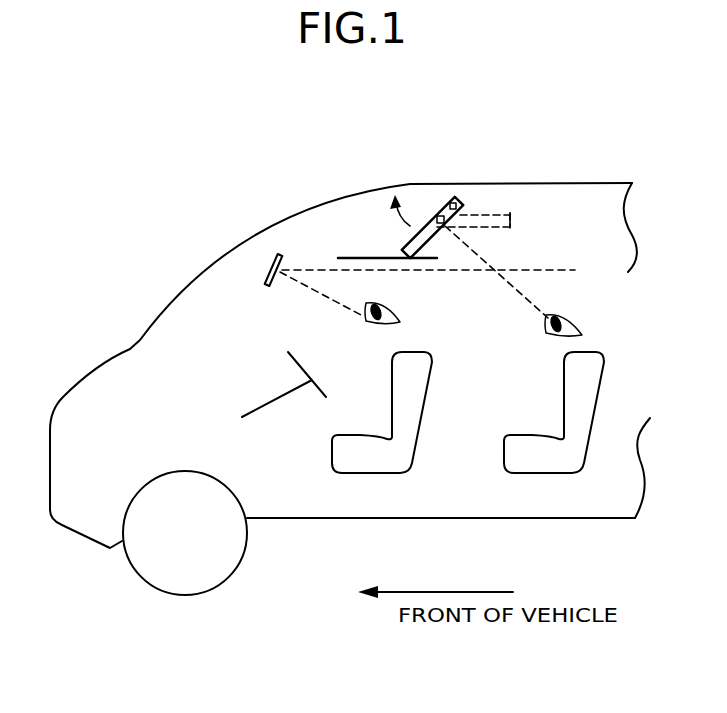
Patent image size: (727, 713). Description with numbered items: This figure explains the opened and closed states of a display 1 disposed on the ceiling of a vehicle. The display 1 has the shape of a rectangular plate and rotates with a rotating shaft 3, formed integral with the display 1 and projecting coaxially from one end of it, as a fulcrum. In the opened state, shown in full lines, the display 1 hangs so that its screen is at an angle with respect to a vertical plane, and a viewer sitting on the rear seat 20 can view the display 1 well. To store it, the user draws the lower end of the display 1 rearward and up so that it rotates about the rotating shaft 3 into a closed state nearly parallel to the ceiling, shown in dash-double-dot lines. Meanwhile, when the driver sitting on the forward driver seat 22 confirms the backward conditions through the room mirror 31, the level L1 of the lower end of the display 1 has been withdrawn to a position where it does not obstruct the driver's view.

The display 1 is at (406, 244).
The rotating shaft 3 is at (431, 219).
The level of the lower end of the display L1 is at (368, 257).
The room mirror 31 is at (264, 270).
The driver seat 22 is at (430, 388).
The rear seat 20 is at (603, 388).